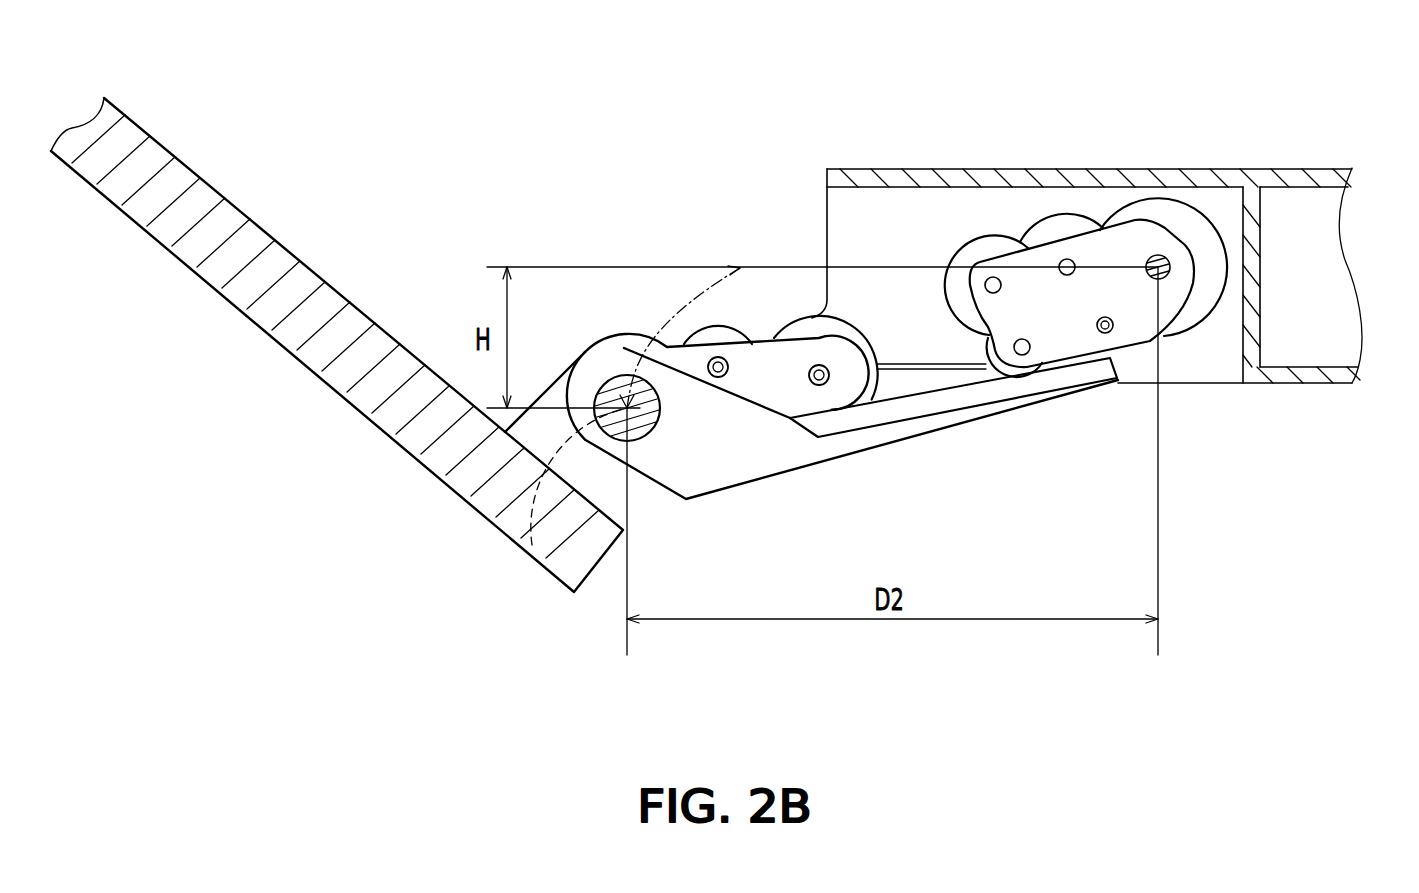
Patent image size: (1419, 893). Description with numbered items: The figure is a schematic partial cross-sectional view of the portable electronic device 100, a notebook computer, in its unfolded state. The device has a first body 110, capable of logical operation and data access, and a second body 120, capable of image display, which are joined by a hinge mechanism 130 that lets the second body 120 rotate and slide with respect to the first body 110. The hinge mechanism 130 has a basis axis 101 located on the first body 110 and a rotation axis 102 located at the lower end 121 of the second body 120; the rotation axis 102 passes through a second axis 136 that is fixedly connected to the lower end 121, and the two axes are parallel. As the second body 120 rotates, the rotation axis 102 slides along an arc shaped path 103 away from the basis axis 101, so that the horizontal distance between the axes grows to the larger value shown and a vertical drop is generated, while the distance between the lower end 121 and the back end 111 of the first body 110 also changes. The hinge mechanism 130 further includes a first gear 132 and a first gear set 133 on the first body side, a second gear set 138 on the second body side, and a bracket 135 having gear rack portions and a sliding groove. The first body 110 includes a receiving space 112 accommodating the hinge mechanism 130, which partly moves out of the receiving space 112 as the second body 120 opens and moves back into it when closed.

The portable electronic device 100 is at (1268, 731).
The basis axis 101 is at (1163, 253).
The rotation axis 102 is at (532, 545).
The arc shaped path 103 is at (680, 303).
The first body 110 is at (1322, 227).
The back end 111 is at (825, 208).
The receiving space 112 is at (1222, 346).
The second body 120 is at (280, 323).
The lower end 121 is at (617, 347).
The hinge mechanism 130 is at (902, 462).
The first gear 132 is at (1202, 238).
The first gear set 133 is at (1053, 210).
The bracket 135 is at (1002, 402).
The second axis 136 is at (660, 432).
The second gear set 138 is at (760, 321).